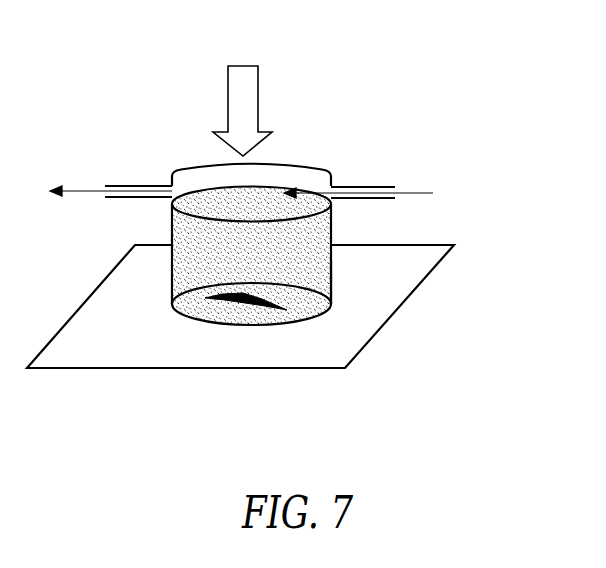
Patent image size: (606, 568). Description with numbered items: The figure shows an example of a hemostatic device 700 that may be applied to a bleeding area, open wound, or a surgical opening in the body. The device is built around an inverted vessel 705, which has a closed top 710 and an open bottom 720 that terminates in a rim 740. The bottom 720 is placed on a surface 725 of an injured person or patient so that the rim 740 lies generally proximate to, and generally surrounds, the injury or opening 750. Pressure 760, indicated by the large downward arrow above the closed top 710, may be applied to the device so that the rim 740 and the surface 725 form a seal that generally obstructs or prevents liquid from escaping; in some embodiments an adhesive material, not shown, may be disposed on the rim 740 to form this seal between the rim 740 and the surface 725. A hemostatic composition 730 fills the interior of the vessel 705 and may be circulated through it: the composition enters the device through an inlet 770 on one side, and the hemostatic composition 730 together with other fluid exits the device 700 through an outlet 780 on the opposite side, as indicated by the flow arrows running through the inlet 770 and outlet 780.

The hemostatic device 700 is at (473, 455).
The inverted vessel 705 is at (310, 140).
The closed top 710 is at (195, 137).
The open bottom 720 is at (315, 313).
The surface 725 is at (136, 357).
The hemostatic composition 730 is at (306, 252).
The rim 740 is at (343, 302).
The injury or opening 750 is at (169, 302).
The pressure 760 is at (242, 95).
The inlet 770 is at (343, 180).
The outlet 780 is at (160, 175).